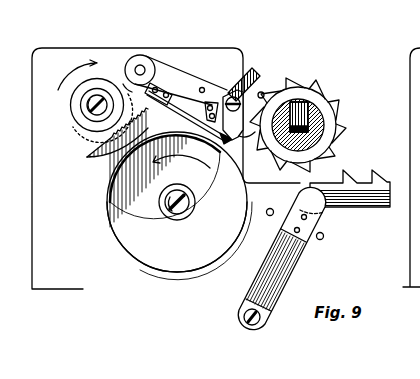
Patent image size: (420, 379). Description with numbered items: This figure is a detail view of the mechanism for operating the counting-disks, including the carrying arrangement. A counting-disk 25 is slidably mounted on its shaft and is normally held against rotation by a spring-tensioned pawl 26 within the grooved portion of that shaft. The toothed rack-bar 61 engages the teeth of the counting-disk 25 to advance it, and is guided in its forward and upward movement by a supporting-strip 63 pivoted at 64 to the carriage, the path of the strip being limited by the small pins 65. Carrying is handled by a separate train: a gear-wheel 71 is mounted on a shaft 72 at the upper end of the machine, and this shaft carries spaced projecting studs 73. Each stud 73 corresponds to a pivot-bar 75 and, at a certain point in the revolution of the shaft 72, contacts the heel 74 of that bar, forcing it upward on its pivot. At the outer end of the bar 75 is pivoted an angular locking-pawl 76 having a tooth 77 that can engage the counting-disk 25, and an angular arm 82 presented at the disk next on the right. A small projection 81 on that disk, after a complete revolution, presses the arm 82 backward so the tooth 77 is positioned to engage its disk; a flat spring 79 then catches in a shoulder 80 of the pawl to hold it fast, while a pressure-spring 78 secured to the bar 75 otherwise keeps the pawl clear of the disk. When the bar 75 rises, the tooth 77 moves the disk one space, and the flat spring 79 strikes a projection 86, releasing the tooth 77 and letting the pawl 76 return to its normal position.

The counting-disk 25 is at (330, 117).
The spring-tensioned pawl 26 is at (306, 100).
The toothed rack-bar 61 is at (369, 207).
The supporting-strip 63 is at (298, 258).
The pivot of supporting-strip 64 is at (250, 328).
The small pins 65 is at (267, 216).
The gear-wheel 71 is at (100, 155).
The shaft 72 is at (87, 98).
The projecting stud 73 is at (76, 128).
The heel 74 is at (124, 88).
The pivot-bar 75 is at (168, 68).
The angular locking-pawl 76 is at (236, 140).
The tooth 77 is at (251, 135).
The pressure-spring 78 is at (238, 88).
The flat spring 79 is at (170, 94).
The shoulder 80 is at (228, 143).
The projection 81 is at (264, 93).
The angular arm 82 is at (250, 82).
The projection 86 is at (203, 88).